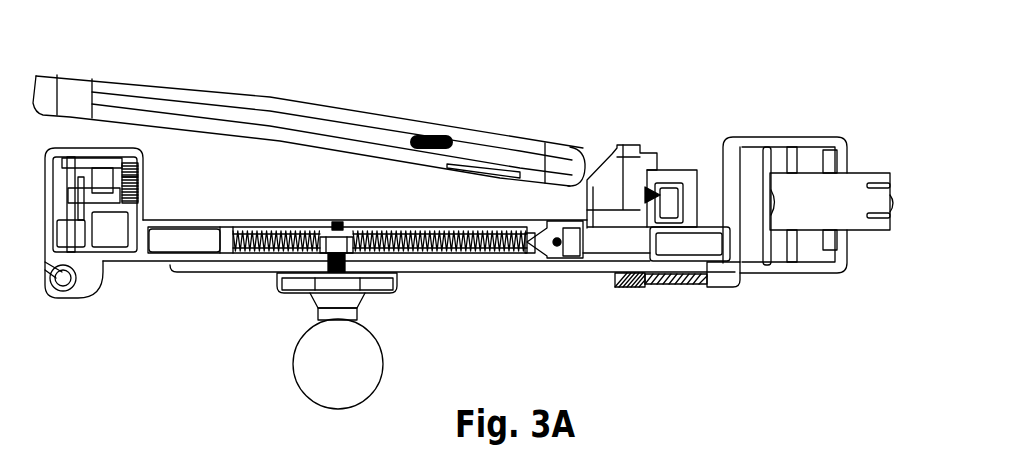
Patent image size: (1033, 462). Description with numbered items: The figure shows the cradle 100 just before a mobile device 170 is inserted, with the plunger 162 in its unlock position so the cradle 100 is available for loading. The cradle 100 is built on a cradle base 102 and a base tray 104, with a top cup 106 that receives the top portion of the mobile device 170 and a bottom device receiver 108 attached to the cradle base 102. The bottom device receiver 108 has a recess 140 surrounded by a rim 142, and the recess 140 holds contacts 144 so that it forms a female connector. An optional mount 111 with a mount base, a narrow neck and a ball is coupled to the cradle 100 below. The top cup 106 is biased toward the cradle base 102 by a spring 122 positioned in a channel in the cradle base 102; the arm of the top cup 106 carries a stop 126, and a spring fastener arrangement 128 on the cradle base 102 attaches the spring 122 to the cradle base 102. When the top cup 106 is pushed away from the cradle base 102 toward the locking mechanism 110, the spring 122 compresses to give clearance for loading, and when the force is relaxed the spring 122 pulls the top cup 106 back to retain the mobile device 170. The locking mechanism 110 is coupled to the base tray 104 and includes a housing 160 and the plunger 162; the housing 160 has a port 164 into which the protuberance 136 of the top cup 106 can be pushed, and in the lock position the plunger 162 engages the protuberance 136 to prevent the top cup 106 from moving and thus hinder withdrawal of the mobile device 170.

The cradle 100 is at (819, 110).
The cradle base 102 is at (155, 257).
The base tray 104 is at (447, 270).
The top cup 106 is at (627, 145).
The bottom device receiver 108 is at (80, 293).
The locking mechanism 110 is at (767, 275).
The mount 111 is at (393, 293).
The spring 122 is at (500, 263).
The stop 126 is at (220, 243).
The spring fastener arrangement 128 is at (557, 260).
The protuberance 136 is at (680, 170).
The recess 140 is at (142, 200).
The rim 142 is at (140, 158).
The contacts 144 is at (137, 188).
The housing 160 is at (853, 158).
The plunger 162 is at (893, 197).
The port 164 is at (714, 180).
The mobile device 170 is at (483, 133).